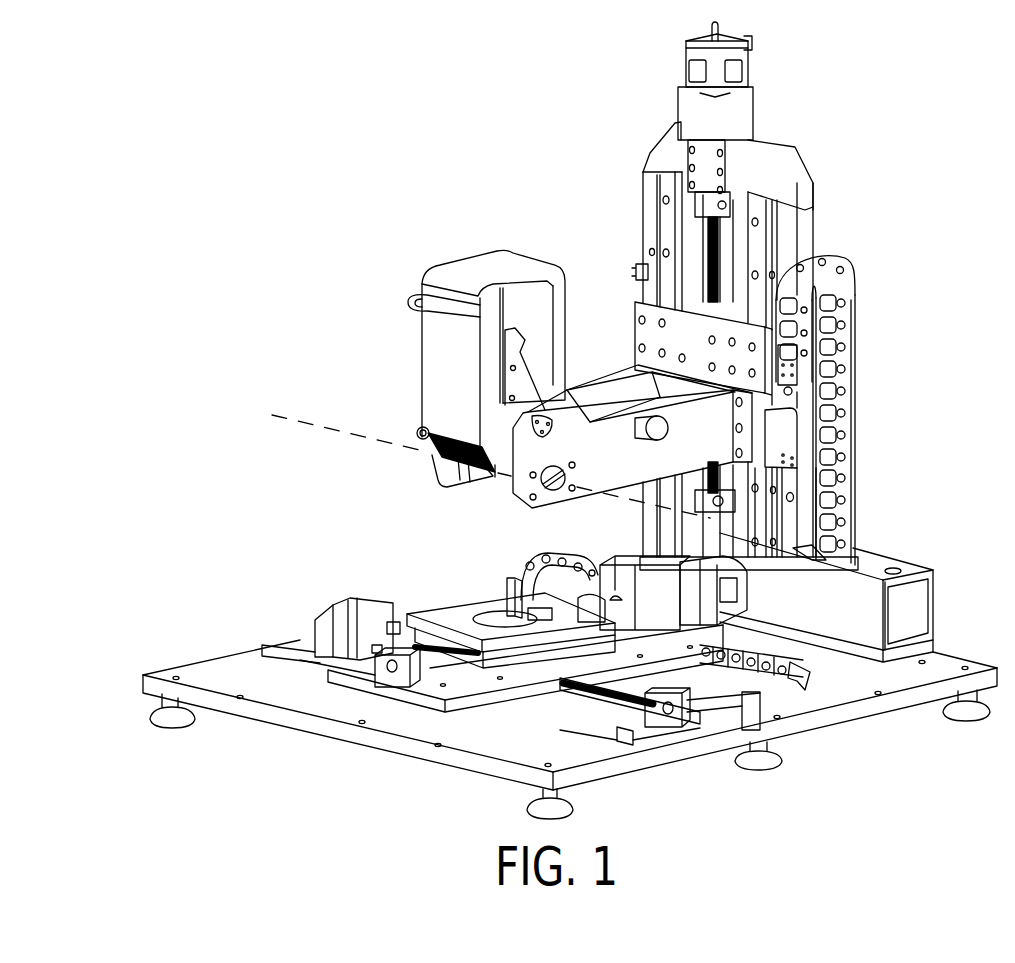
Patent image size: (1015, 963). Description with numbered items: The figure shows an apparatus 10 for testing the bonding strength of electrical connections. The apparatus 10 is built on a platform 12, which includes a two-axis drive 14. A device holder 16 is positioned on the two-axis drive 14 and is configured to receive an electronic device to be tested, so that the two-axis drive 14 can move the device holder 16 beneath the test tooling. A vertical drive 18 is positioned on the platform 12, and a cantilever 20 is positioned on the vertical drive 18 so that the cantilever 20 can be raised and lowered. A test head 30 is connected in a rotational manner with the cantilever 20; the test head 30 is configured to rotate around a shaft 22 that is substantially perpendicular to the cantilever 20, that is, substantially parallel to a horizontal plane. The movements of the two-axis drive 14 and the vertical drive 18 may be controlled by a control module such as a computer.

The apparatus 10 is at (876, 243).
The platform 12 is at (217, 664).
The two-axis drive 14 is at (398, 576).
The device holder 16 is at (467, 607).
The vertical drive 18 is at (616, 155).
The cantilever 20 is at (620, 388).
The shaft 22 is at (297, 418).
The test head 30 is at (437, 357).